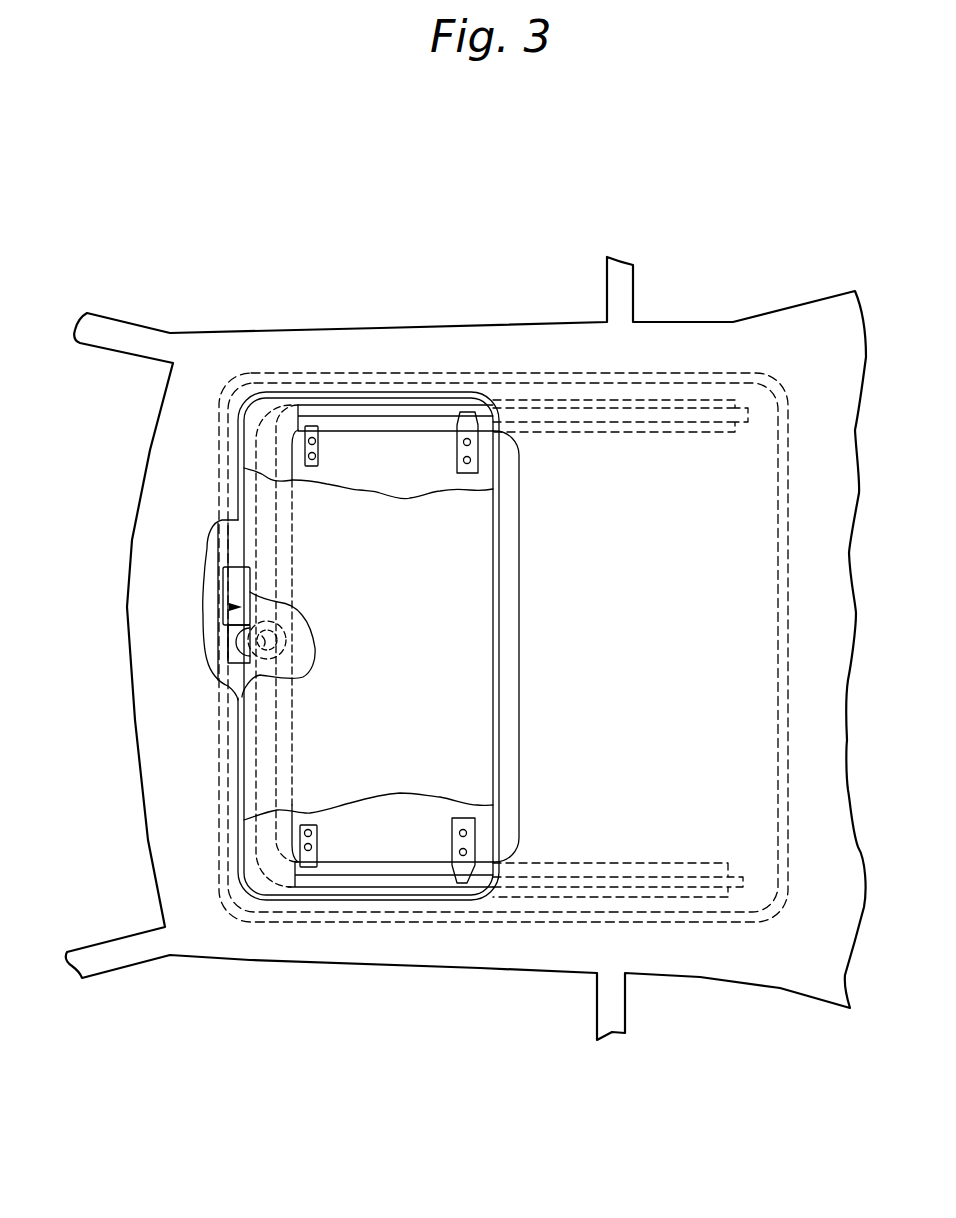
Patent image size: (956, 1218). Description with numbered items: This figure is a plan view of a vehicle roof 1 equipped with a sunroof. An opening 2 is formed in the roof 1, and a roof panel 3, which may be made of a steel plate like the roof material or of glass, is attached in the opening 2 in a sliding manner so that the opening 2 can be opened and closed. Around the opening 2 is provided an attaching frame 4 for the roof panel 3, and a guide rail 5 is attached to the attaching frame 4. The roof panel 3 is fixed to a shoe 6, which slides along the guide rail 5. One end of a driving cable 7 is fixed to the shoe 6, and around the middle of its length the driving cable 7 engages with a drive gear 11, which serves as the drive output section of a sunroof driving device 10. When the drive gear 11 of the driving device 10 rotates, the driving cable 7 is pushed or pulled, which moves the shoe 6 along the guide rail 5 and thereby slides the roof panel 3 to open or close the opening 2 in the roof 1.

The roof 1 is at (435, 348).
The opening 2 is at (501, 577).
The roof panel 3 is at (470, 650).
The attaching frame 4 is at (722, 378).
The guide rail 5 is at (692, 428).
The shoe 6 is at (468, 468).
The driving cable 7 is at (277, 704).
The sunroof driving device 10 is at (242, 607).
The drive gear 11 is at (252, 627).